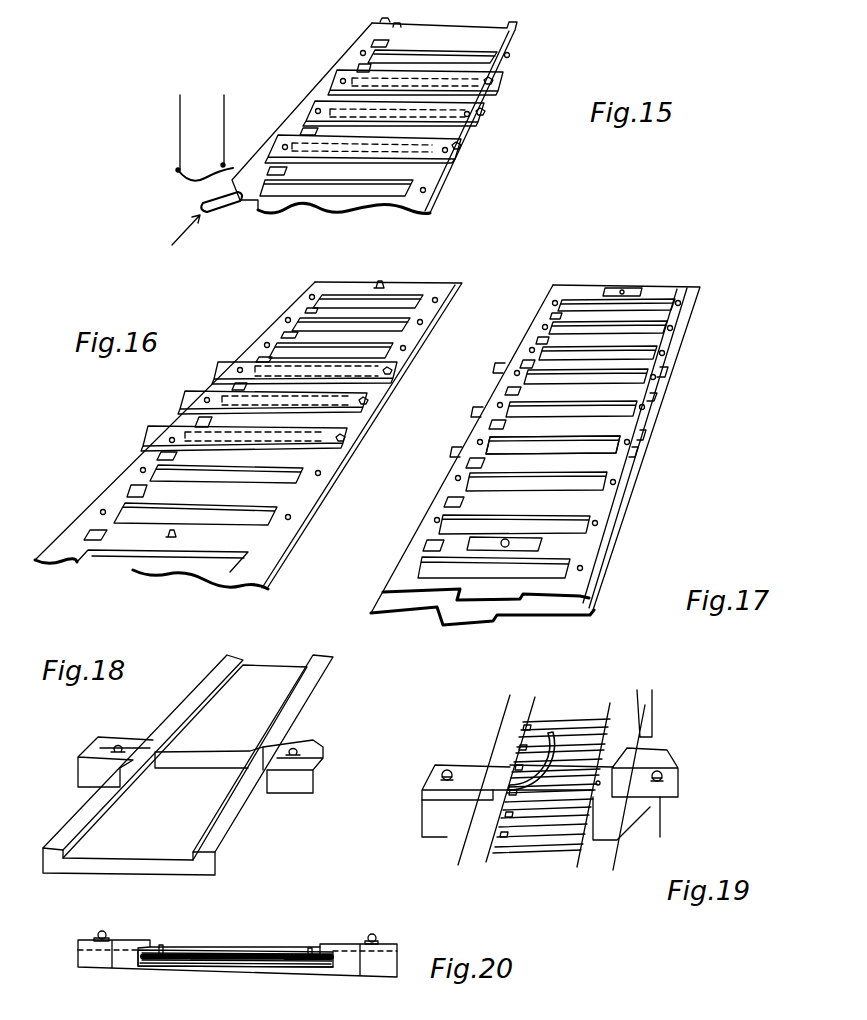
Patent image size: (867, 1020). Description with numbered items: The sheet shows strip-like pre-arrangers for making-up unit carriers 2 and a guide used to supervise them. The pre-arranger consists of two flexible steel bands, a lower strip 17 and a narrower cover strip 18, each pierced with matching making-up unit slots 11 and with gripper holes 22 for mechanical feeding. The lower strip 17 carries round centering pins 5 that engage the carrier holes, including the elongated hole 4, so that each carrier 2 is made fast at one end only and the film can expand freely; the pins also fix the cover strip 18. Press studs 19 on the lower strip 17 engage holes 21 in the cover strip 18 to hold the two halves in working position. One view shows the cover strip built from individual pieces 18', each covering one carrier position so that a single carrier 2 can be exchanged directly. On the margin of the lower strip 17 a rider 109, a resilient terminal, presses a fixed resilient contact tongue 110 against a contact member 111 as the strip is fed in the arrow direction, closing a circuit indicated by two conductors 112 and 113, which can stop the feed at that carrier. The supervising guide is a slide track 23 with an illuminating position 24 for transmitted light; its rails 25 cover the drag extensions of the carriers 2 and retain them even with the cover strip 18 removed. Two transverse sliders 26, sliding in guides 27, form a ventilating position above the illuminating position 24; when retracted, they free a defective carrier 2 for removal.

In FIG. 15, the making-up unit carrier 2 is at (485, 79).
In FIG. 16, the making-up unit carrier 2 is at (158, 440).
In FIG. 17, the making-up unit carrier 2 is at (645, 432).
In FIG. 19, the making-up unit carrier 2 is at (547, 730).
In FIG. 20, the making-up unit carrier 2 is at (228, 953).
In FIG. 15, the elongated hole 4 is at (486, 84).
In FIG. 16, the elongated hole 4 is at (365, 405).
In FIG. 19, the elongated hole 4 is at (553, 737).
In FIG. 15, the centering pin 5 is at (361, 50).
In FIG. 16, the centering pin 5 is at (265, 345).
In FIG. 17, the centering pin 5 is at (672, 327).
In FIG. 19, the centering pin 5 is at (599, 785).
In FIG. 20, the centering pin 5 is at (167, 960).
In FIG. 15, the making-up unit slot 11 is at (297, 186).
In FIG. 16, the making-up unit slot 11 is at (123, 513).
In FIG. 17, the making-up unit slot 11 is at (552, 573).
In FIG. 19, the making-up unit slot 11 is at (587, 777).
In FIG. 15, the lower strip 17 is at (437, 177).
In FIG. 16, the lower strip 17 is at (298, 310).
In FIG. 17, the lower strip 17 is at (593, 578).
In FIG. 19, the lower strip 17 is at (543, 823).
In FIG. 20, the lower strip 17 is at (262, 961).
In FIG. 17, the cover strip 18 is at (596, 464).
In FIG. 20, the cover strip 18 is at (237, 935).
In FIG. 15, the individual cover strip piece 18' is at (416, 129).
In FIG. 16, the press stud 19 is at (383, 287).
In FIG. 17, the hole in cover strip 21 is at (622, 292).
In FIG. 15, the gripper hole 22 is at (307, 127).
In FIG. 16, the gripper hole 22 is at (285, 333).
In FIG. 17, the gripper hole 22 is at (425, 538).
In FIG. 18, the slide track 23 is at (123, 847).
In FIG. 19, the slide track 23 is at (452, 838).
In FIG. 20, the slide track 23 is at (303, 968).
In FIG. 18, the illuminating position 24 is at (192, 758).
In FIG. 18, the rail 25 is at (60, 838).
In FIG. 19, the rail 25 is at (555, 780).
In FIG. 20, the rail 25 is at (160, 924).
In FIG. 18, the transverse slider 26 is at (142, 750).
In FIG. 19, the transverse slider 26 is at (465, 777).
In FIG. 20, the transverse slider 26 is at (380, 950).
In FIG. 18, the guide 27 is at (88, 777).
In FIG. 19, the guide 27 is at (652, 802).
In FIG. 15, the rider 109 is at (218, 196).
In FIG. 15, the resilient contact tongue 110 is at (188, 178).
In FIG. 15, the contact member 111 is at (222, 164).
In FIG. 15, the conductor 112 is at (180, 118).
In FIG. 15, the conductor 113 is at (224, 117).